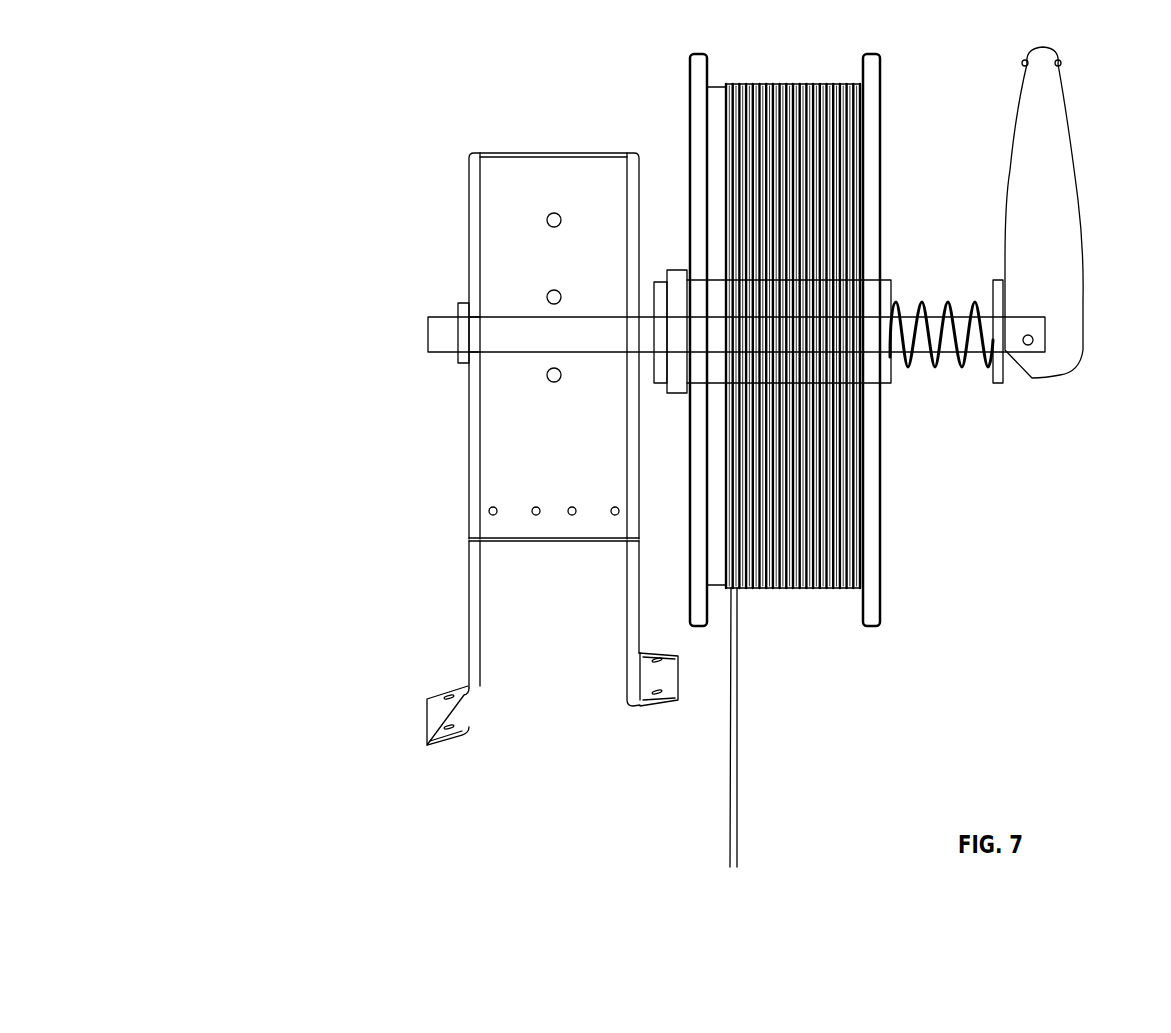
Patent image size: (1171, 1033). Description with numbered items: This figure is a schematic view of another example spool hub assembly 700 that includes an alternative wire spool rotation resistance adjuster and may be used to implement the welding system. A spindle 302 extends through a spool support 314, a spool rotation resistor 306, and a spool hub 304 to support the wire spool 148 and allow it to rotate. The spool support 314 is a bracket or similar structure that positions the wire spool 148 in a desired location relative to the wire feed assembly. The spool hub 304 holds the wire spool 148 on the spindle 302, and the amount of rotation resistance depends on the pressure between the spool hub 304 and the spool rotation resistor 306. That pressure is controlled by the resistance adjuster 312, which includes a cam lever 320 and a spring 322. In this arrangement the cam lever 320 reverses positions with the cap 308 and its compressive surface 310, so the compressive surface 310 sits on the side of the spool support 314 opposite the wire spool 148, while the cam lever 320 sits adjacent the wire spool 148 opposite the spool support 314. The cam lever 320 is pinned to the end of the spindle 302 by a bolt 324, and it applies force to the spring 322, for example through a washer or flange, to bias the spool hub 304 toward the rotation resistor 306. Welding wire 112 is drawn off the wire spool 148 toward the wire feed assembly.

The spool hub assembly 700 is at (252, 92).
The wire spool 148 is at (688, 54).
The spool support 314 is at (483, 158).
The compressive surface 310 is at (487, 312).
The cap 308 is at (458, 366).
The spindle 302 is at (598, 323).
The spool rotation resistor 306 is at (672, 278).
The spool hub 304 is at (887, 278).
The spring 322 is at (920, 300).
The cam lever 320 is at (1021, 113).
The resistance adjuster 312 is at (1087, 113).
The bolt 324 is at (1032, 345).
The cable 112 is at (728, 748).